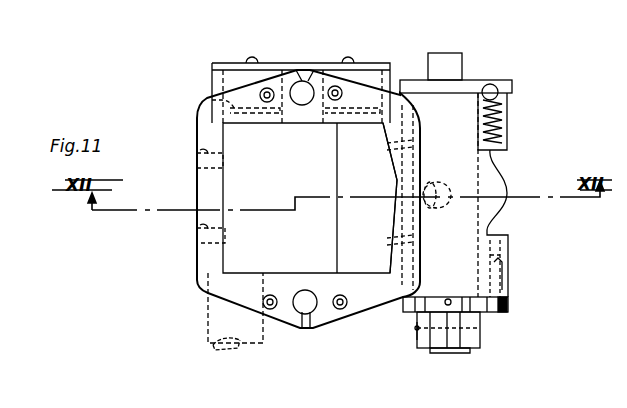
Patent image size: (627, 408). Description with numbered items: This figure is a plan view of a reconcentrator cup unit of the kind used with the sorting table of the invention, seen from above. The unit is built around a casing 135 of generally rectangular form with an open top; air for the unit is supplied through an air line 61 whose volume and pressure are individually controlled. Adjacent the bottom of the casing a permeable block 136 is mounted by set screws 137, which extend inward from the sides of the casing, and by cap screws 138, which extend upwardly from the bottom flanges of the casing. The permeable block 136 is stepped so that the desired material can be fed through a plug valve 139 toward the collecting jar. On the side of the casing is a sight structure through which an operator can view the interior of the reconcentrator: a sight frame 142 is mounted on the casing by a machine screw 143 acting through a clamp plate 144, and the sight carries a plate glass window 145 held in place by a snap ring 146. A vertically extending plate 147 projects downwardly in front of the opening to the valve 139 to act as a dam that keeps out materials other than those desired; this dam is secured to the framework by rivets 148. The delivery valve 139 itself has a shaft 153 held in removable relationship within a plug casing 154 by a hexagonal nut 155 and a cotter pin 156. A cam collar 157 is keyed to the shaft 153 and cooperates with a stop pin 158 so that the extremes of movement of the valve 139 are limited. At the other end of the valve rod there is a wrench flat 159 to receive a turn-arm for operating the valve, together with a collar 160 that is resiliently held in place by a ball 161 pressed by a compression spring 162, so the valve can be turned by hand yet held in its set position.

The air line 61 is at (208, 315).
The casing 135 is at (198, 262).
The permeable block 136 is at (250, 195).
The set screw 137 is at (197, 160).
The cap screw 138 is at (262, 123).
The plug valve 139 is at (508, 183).
The sight frame 142 is at (368, 72).
The machine screw 143 is at (352, 62).
The clamp plate 144 is at (283, 63).
The plate glass window 145 is at (212, 82).
The snap ring 146 is at (208, 100).
The vertically extending plate 147 is at (400, 167).
The rivet 148 is at (415, 140).
The shaft 153 is at (448, 353).
The plug casing 154 is at (483, 167).
The hexagonal nut 155 is at (420, 337).
The cotter pin 156 is at (480, 328).
The cam collar 157 is at (508, 300).
The stop pin 158 is at (502, 287).
The wrench flat 159 is at (455, 58).
The collar 160 is at (470, 85).
The ball 161 is at (498, 86).
The compression spring 162 is at (503, 113).